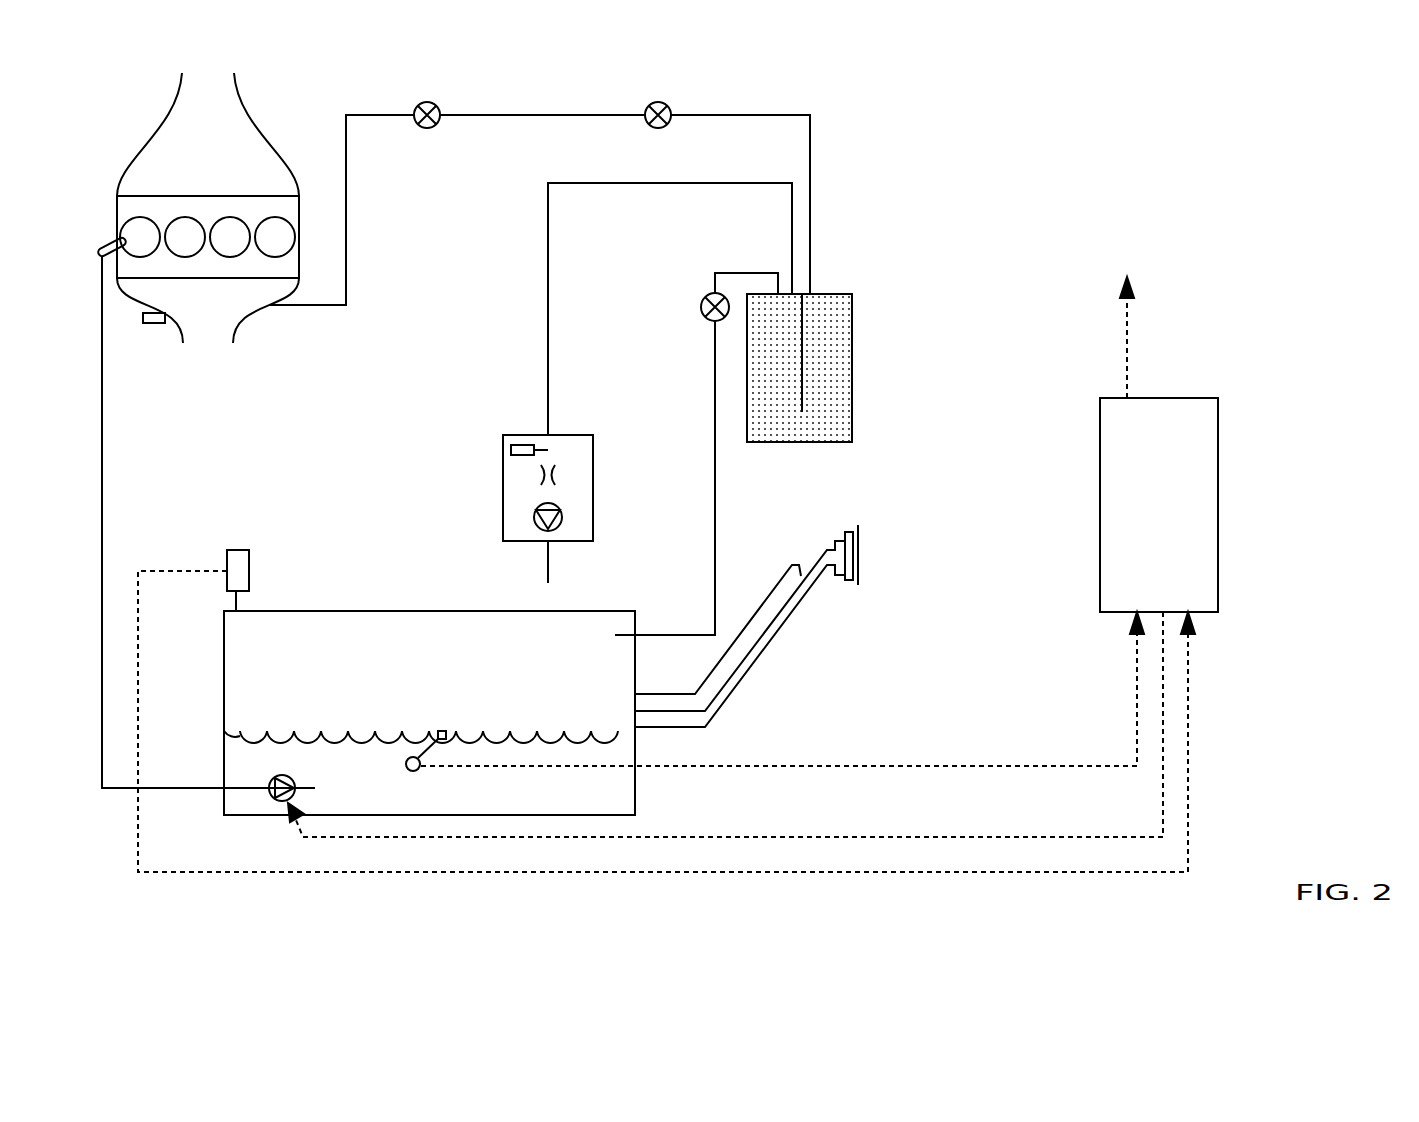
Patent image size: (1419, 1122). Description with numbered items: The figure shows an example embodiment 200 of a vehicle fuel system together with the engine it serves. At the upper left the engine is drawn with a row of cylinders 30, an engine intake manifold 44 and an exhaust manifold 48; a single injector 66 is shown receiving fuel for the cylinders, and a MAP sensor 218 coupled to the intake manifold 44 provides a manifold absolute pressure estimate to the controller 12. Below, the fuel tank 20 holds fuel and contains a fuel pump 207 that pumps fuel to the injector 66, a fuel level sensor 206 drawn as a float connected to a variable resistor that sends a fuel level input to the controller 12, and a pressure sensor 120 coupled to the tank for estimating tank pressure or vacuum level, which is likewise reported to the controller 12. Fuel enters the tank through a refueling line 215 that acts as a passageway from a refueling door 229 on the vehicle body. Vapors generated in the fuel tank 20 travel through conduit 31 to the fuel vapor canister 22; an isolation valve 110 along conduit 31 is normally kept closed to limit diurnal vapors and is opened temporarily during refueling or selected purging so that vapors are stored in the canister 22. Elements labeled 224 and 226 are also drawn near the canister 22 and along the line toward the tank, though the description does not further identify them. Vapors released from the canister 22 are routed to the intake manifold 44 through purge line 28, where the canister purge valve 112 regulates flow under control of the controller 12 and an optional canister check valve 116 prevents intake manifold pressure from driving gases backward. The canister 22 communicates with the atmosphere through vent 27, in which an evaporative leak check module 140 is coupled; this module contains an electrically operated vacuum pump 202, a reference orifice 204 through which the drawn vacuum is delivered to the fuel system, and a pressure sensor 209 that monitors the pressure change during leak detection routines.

The example embodiment of fuel system 200 is at (1318, 125).
The exhaust manifold 48 is at (218, 149).
The engine intake manifold 44 is at (218, 331).
The cylinders 30 is at (134, 221).
The injector 66 is at (109, 244).
The MAP sensor 218 is at (160, 323).
The purge line 28 is at (551, 114).
The canister check valve 116 is at (430, 102).
The canister purge valve 112 is at (661, 102).
The vent 27 is at (617, 183).
The conduit 31 is at (738, 273).
The isolation valve 110 is at (713, 293).
The fuel vapor canister 22 is at (855, 392).
The canister buffer 224 is at (865, 291).
The evaporative leak check module 140 is at (574, 435).
The pressure sensor 209 is at (511, 450).
The reference orifice 204 is at (560, 475).
The vacuum pump 202 is at (562, 518).
The fuel tank 20 is at (224, 703).
The pressure sensor 120 is at (227, 565).
The fuel pump 207 is at (283, 775).
The fuel level sensor 206 is at (446, 731).
The refueling line 215 is at (757, 660).
The refueling door 229 is at (861, 557).
The vapor line 226 is at (728, 514).
The controller 12 is at (1148, 532).